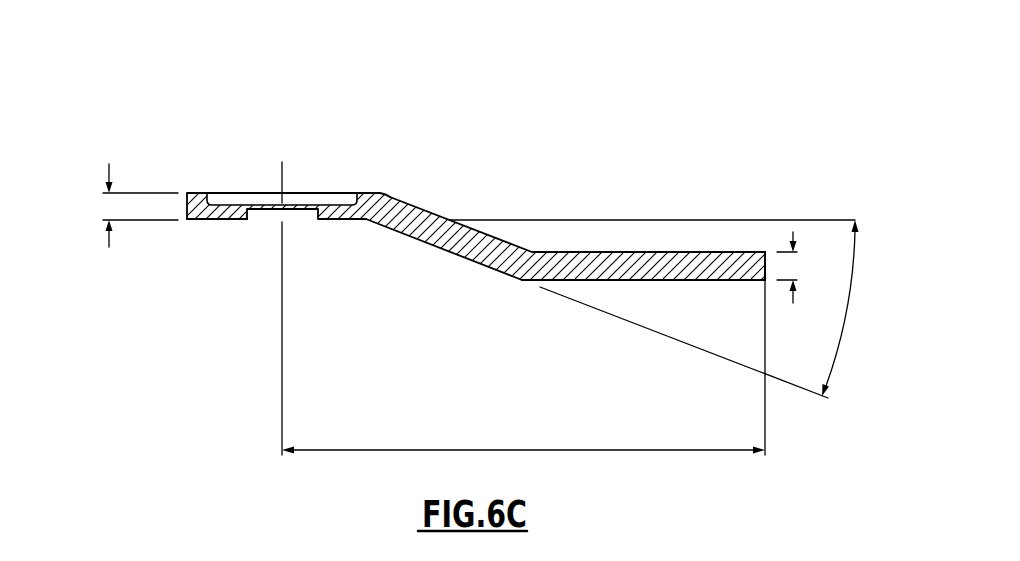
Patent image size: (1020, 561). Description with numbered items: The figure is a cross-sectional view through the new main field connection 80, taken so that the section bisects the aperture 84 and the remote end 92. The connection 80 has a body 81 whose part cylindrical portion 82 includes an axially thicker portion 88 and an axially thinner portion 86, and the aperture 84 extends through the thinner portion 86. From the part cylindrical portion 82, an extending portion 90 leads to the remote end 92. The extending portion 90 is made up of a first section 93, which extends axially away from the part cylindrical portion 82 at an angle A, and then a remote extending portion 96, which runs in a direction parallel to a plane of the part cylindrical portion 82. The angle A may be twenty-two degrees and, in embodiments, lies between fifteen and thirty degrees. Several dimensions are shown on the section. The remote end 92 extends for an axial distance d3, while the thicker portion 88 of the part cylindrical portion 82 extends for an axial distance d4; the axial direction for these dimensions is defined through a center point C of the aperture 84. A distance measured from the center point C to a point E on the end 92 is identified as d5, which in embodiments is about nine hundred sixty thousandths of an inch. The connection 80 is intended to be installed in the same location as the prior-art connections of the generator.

The main field connection 80 is at (471, 284).
The body 81 is at (389, 193).
The part cylindrical portion 82 is at (197, 193).
The aperture 84 is at (267, 210).
The axially thinner portion 86 is at (223, 206).
The axially thicker portion 88 is at (190, 220).
The extending portion 90 is at (533, 342).
The remote end 92 is at (763, 283).
The first section 93 is at (465, 258).
The remote extending portion 96 is at (690, 256).
The center point C is at (281, 200).
The point on the end E is at (738, 278).
The angle A is at (841, 330).
The axial distance of remote end d3 is at (795, 286).
The axial distance of thicker portion d4 is at (108, 165).
The distance from center point to end d5 is at (463, 448).